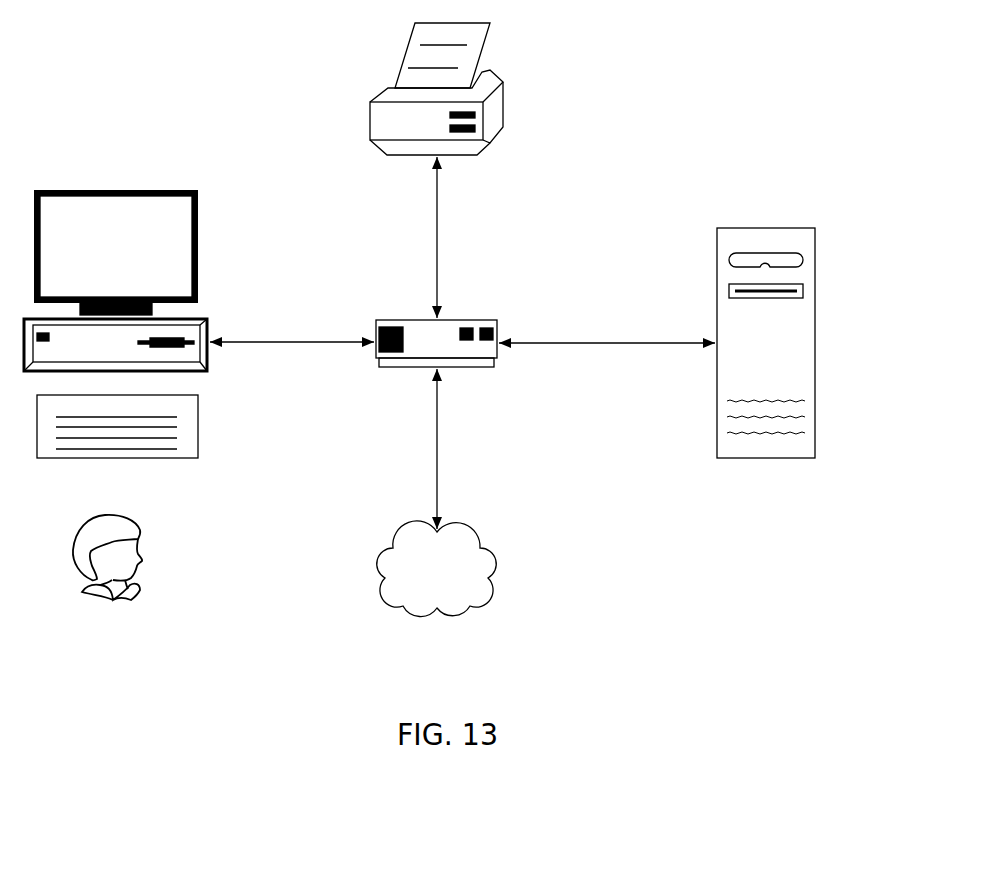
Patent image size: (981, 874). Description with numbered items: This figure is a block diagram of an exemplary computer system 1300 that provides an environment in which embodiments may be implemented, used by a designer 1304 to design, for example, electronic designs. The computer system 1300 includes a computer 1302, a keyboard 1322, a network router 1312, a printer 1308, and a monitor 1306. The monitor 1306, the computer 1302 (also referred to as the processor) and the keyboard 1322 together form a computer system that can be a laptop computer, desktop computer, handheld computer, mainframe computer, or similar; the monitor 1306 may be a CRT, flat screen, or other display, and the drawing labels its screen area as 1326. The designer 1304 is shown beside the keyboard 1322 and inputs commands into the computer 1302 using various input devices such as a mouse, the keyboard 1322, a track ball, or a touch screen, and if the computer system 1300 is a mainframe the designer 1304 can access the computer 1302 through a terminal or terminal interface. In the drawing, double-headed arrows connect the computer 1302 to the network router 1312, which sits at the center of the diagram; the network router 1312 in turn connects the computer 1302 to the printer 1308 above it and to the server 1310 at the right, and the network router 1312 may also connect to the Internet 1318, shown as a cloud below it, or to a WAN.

The computer system 1300 is at (696, 100).
The computer 1302 is at (209, 319).
The designer 1304 is at (138, 518).
The monitor 1306 is at (198, 190).
The printer 1308 is at (370, 133).
The server 1310 is at (717, 443).
The network router 1312 is at (467, 320).
The Internet 1318 is at (467, 523).
The keyboard 1322 is at (199, 425).
The display screen 1326 is at (200, 246).